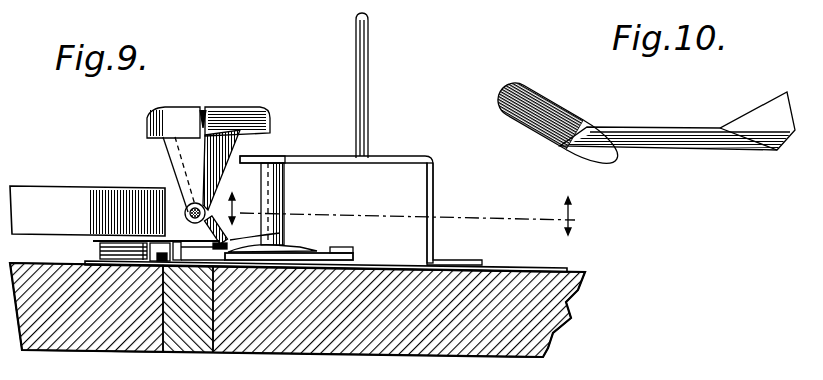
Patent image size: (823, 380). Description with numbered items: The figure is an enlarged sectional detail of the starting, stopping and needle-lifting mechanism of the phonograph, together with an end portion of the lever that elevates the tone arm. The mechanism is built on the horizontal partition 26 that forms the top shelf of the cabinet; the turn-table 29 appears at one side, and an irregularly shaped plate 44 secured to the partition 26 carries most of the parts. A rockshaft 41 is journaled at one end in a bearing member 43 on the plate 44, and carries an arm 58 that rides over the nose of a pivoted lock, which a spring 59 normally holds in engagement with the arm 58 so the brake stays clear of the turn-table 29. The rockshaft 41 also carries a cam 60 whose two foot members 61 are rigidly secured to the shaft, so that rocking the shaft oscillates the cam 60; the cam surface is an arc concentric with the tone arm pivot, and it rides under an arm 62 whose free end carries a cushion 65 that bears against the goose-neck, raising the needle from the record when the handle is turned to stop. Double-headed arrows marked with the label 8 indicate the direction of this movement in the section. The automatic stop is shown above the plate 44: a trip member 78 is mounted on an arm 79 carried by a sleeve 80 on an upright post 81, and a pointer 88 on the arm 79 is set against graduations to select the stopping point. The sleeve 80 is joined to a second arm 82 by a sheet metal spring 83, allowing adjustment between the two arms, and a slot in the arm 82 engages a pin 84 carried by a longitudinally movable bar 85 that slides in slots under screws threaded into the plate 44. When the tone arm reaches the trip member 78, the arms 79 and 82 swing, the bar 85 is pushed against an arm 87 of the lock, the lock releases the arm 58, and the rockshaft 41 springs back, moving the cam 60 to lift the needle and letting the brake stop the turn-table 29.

In FIG. 9, the horizontal partition 26 is at (555, 317).
In FIG. 9, the irregularly shaped plate 44 is at (517, 268).
In FIG. 9, the turn-table 29 is at (35, 200).
In FIG. 9, the spring 59 is at (100, 248).
In FIG. 9, the bearing member 43 is at (197, 248).
In FIG. 9, the longitudinally movable bar 85 is at (213, 262).
In FIG. 9, the cam 60 is at (215, 114).
In FIG. 9, the foot members 61 is at (213, 157).
In FIG. 9, the arm 87 is at (172, 240).
In FIG. 9, the rockshaft 41 is at (205, 206).
In FIG. 9, the direction arrow 8 is at (403, 216).
In FIG. 9, the arm 79 is at (322, 157).
In FIG. 9, the upright post 81 is at (280, 157).
In FIG. 9, the pointer 88 is at (428, 190).
In FIG. 9, the trip member 78 is at (368, 64).
In FIG. 9, the sleeve 80 is at (284, 204).
In FIG. 9, the arm 58 is at (190, 241).
In FIG. 9, the sheet metal spring 83 is at (287, 250).
In FIG. 9, the pin 84 is at (340, 250).
In FIG. 9, the arm 82 is at (358, 255).
In FIG. 10, the cushion 65 is at (562, 113).
In FIG. 10, the arm 62 is at (693, 134).